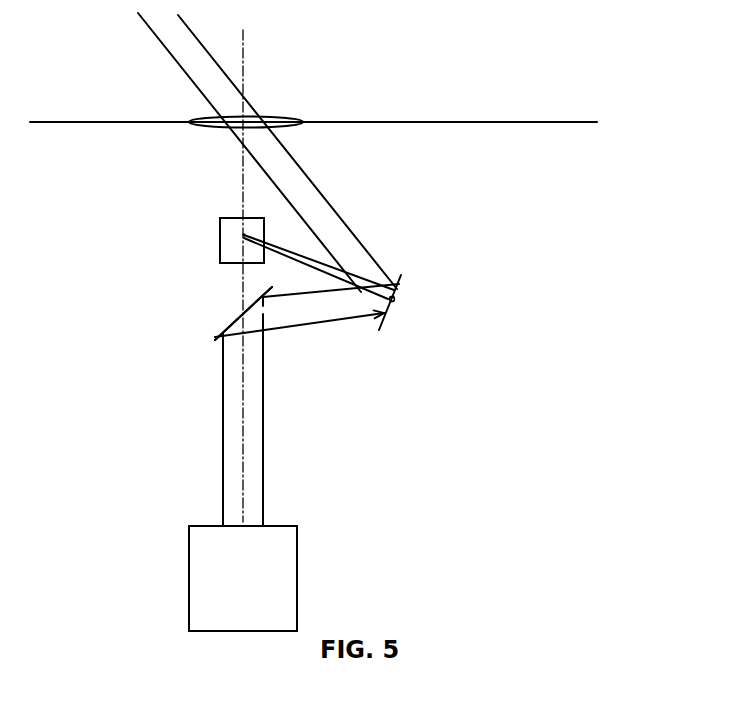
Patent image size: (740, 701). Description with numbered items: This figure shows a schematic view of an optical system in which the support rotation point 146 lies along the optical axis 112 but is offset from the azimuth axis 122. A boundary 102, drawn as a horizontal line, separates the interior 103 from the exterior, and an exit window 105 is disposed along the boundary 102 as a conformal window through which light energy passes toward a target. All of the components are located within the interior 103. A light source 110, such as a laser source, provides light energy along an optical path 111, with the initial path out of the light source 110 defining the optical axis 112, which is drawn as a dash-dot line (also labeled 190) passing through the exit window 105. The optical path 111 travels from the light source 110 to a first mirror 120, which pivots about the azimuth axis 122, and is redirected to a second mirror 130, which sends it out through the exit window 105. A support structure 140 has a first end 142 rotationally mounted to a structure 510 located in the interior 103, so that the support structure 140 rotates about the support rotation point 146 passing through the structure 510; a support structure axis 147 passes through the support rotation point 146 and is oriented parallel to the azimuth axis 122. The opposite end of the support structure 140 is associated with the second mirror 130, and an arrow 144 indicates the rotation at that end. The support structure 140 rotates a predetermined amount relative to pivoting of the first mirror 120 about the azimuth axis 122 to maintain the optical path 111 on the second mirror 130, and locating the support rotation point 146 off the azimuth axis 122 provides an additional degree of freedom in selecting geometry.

The boundary 102 is at (588, 122).
The interior 103 is at (570, 170).
The exit window 105 is at (272, 118).
The light source 110 is at (297, 578).
The optical path 111 is at (322, 188).
The optical axis 112 is at (315, 270).
The axis 190 is at (243, 52).
The first mirror 120 is at (230, 325).
The azimuth axis 122 is at (240, 317).
The second mirror 130 is at (396, 290).
The support structure 140 is at (327, 264).
The first end 142 is at (220, 214).
The pivot point 144 is at (400, 313).
The support rotation point 146 is at (238, 240).
The support structure axis 147 is at (244, 235).
The structure 510 is at (254, 217).